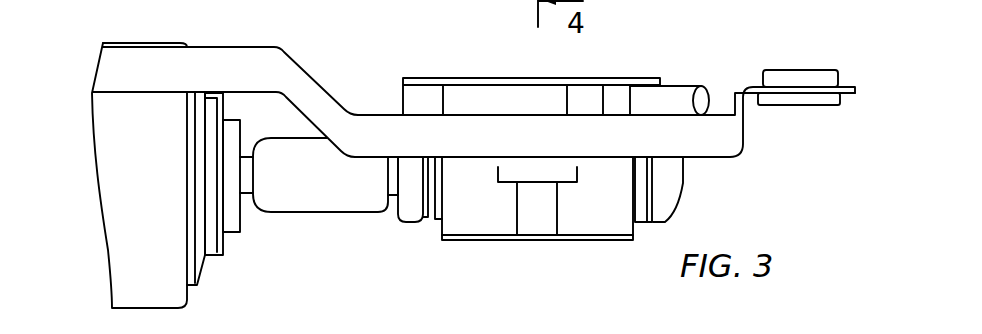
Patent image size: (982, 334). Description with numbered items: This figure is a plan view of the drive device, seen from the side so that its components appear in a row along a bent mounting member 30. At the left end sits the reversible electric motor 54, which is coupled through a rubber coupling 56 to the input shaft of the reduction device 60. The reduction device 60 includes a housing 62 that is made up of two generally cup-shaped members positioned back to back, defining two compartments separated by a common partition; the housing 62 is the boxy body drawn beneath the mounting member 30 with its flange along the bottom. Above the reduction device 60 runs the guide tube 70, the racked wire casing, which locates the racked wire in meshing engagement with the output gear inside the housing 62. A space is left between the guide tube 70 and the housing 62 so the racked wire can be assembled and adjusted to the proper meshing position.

The mounting bracket 30 is at (302, 54).
The reversible electric motor 54 is at (107, 150).
The rubber coupling 56 is at (292, 208).
The reduction device 60 is at (488, 246).
The housing 62 is at (605, 240).
The guide tube 70 is at (675, 87).